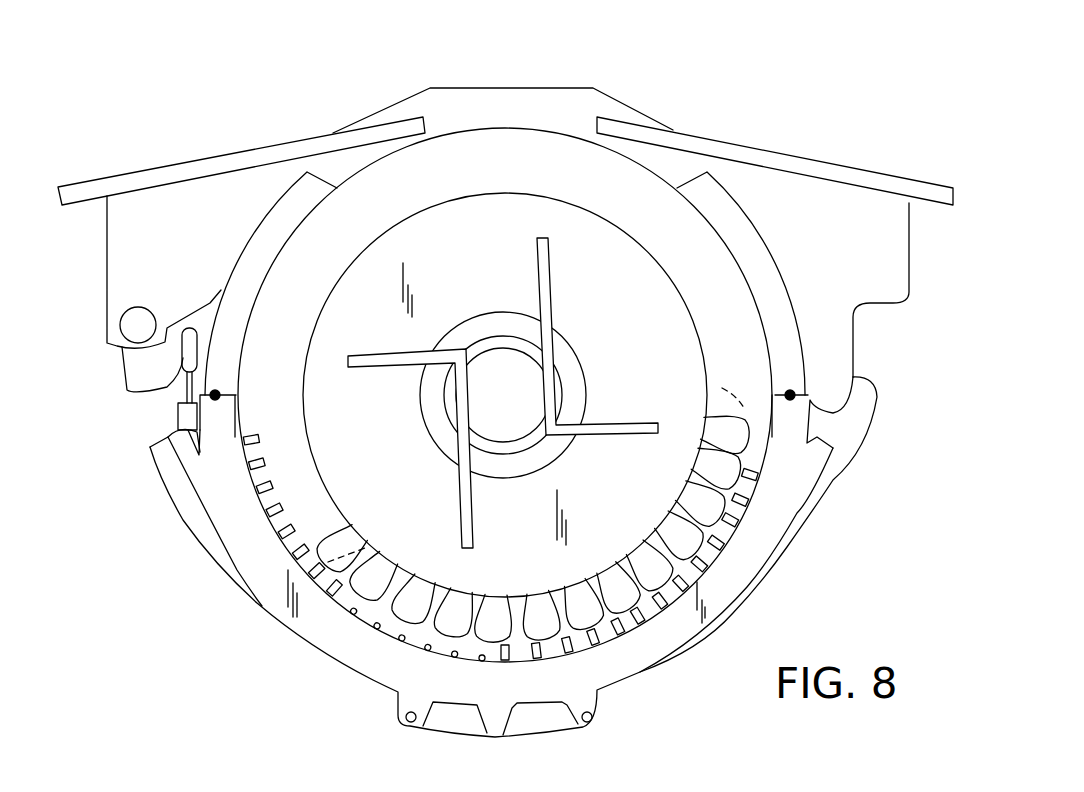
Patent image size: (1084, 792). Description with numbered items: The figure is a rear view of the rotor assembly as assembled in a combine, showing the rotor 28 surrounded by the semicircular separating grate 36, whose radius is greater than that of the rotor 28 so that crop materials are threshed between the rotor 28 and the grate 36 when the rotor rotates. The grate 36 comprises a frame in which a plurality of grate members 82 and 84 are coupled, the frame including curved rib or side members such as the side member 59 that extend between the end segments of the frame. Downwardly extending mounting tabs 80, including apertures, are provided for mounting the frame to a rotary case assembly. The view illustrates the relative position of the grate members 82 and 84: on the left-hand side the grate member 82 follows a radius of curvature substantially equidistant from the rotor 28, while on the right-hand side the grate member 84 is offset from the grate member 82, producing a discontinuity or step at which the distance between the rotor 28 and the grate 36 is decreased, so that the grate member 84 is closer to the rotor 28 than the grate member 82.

The rotor 28 is at (613, 220).
The grate 36 is at (247, 598).
The side member 59 is at (800, 517).
The mounting tab 80 is at (518, 722).
The grate member 82 is at (325, 603).
The grate member 84 is at (658, 620).